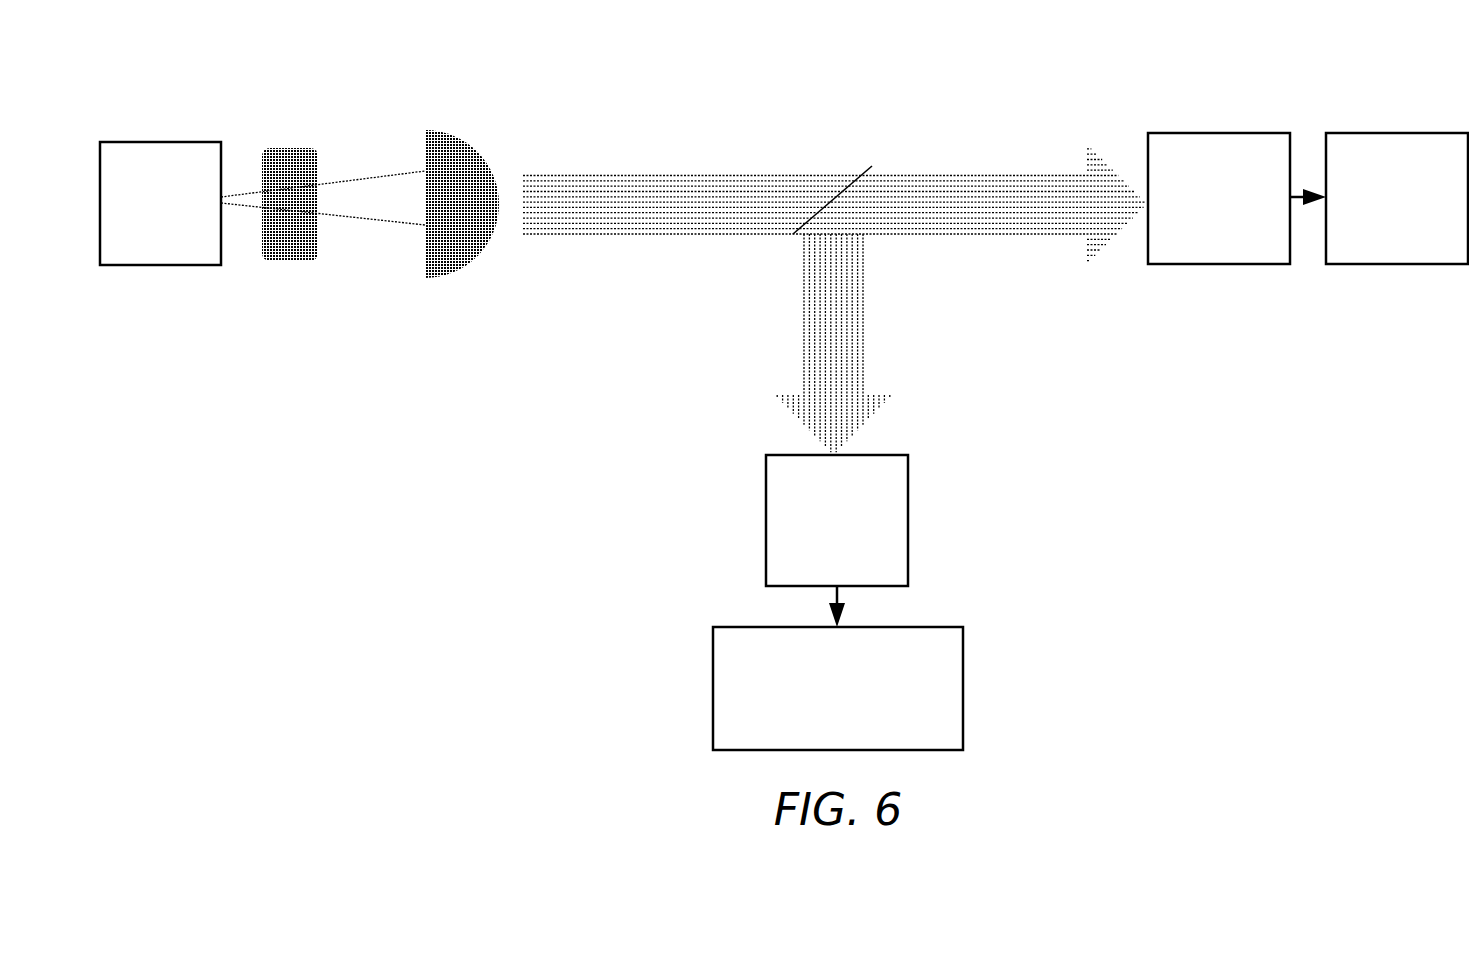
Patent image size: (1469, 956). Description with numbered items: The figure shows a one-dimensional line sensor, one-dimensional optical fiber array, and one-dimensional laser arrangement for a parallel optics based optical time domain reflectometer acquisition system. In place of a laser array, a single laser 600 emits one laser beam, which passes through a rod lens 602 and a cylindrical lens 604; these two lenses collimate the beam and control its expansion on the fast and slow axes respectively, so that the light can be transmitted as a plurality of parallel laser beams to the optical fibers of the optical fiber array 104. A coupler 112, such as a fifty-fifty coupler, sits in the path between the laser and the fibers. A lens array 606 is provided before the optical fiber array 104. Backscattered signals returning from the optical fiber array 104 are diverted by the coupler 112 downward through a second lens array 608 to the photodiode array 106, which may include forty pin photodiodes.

The laser 600 is at (142, 230).
The rod lens 602 is at (266, 137).
The cylindrical lens 604 is at (430, 116).
The coupler 112 is at (862, 150).
The lens array 606 is at (1201, 238).
The optical fiber array 104 is at (1379, 250).
The lens array 608 is at (819, 561).
The photodiode array 106 is at (820, 729).